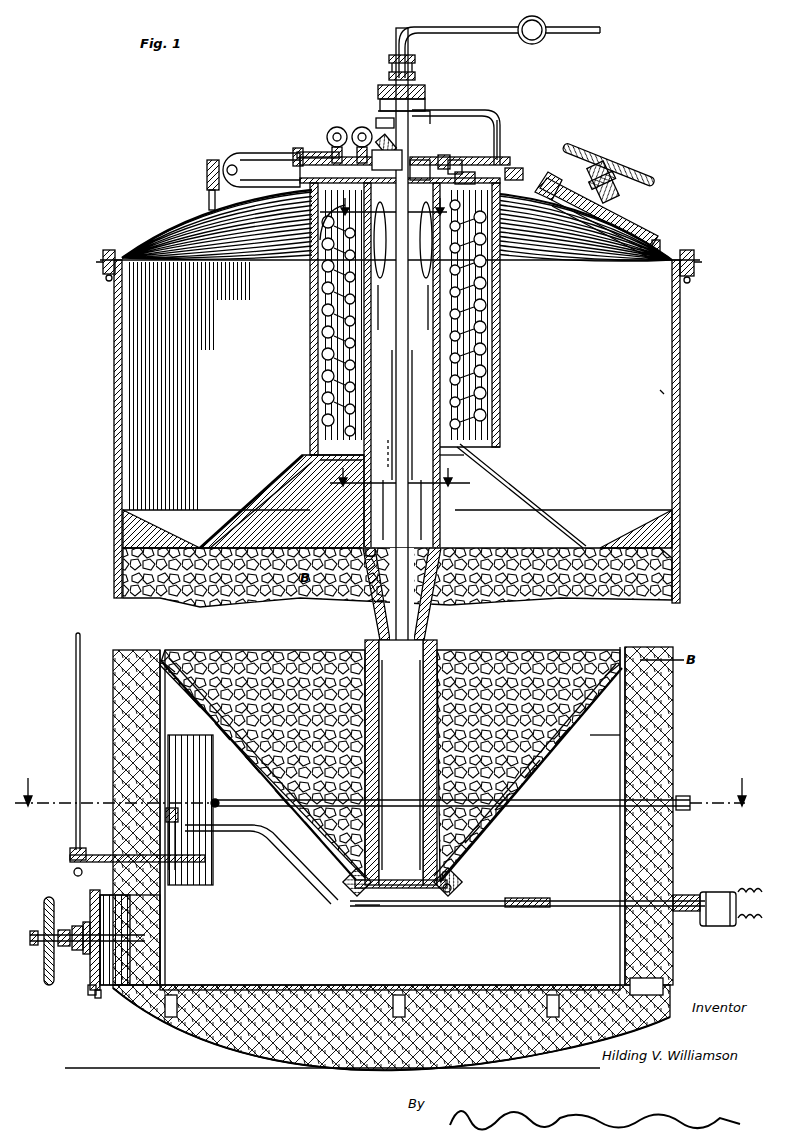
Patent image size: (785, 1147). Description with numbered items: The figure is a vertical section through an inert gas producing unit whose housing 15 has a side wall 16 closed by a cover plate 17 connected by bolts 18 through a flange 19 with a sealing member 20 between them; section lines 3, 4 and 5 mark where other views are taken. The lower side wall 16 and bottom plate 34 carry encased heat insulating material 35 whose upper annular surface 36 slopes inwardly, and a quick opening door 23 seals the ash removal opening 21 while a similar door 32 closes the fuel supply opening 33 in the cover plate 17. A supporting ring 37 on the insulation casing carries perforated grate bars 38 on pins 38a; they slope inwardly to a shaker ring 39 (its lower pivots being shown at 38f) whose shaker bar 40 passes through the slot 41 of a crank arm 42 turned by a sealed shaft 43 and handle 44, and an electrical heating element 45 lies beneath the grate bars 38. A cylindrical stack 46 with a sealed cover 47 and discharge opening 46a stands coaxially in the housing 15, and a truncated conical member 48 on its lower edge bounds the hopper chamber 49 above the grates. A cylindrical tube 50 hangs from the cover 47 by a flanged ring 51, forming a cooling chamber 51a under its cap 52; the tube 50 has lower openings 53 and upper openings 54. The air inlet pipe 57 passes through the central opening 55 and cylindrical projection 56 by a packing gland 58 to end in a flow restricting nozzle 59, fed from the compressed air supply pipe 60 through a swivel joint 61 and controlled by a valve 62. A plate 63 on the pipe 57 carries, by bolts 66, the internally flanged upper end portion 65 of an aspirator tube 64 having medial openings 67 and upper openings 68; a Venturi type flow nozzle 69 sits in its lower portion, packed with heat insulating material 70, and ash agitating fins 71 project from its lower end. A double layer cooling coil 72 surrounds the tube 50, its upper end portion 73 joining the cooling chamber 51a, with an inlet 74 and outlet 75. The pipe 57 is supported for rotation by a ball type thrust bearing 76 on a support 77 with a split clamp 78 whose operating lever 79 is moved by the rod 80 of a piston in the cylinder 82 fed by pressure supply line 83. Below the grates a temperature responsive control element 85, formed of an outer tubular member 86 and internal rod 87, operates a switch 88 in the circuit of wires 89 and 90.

The section line 3- 3 is at (387, 792).
The section line 4- 4 is at (386, 209).
The section line 5- 5 is at (400, 482).
The housing 15 is at (684, 473).
The side wall 16 is at (114, 428).
The cover plate 17 is at (172, 248).
The bolts 18 is at (108, 250).
The flange 19 is at (104, 272).
The sealing member 20 is at (96, 260).
The ash removal opening 21 is at (142, 912).
The quick opening door 23 is at (90, 990).
The quick opening door 32 is at (640, 220).
The fuel supply opening 33 is at (600, 230).
The bottom plate 34 is at (342, 1070).
The heat insulating material 35 is at (116, 738).
The upper annular surface 36 is at (124, 526).
The supporting ring 37 is at (610, 750).
The perforated grate bars 38 is at (232, 768).
The pins 38a is at (704, 720).
The plate pivot 38f is at (454, 890).
The shaker ring 39 is at (458, 880).
The shaker bar 40 is at (286, 852).
The slot 41 is at (178, 814).
The crank arm 42 is at (176, 844).
The shaft 43 is at (200, 858).
The handle 44 is at (74, 828).
The electrical heating element 45 is at (214, 802).
The cylindrical stack 46 is at (500, 338).
The discharge opening 46a is at (296, 148).
The sealed cover 47 is at (446, 156).
The truncated conical member 48 is at (548, 496).
The hopper chamber 49 is at (662, 392).
The cylindrical tube 50 is at (452, 472).
The flanged ring 51 is at (332, 150).
The cooling chamber 51a is at (456, 162).
The cap 52 is at (420, 160).
The openings 53 is at (404, 462).
The openings 54 is at (382, 258).
The central opening 55 is at (386, 166).
The cylindrical projection 56 is at (380, 140).
The air inlet pipe 57 is at (410, 90).
The packing gland 58 is at (378, 122).
The flow restricting nozzle 59 is at (364, 512).
The compressed air supply pipe 60 is at (399, 30).
The swivel joint 61 is at (389, 66).
The valve 62 is at (536, 44).
The plate 63 is at (458, 220).
The aspirator tube 64 is at (405, 415).
The internally flanged upper end portion 65 is at (346, 218).
The bolts 66 is at (474, 178).
The openings 67 is at (371, 500).
The openings 68 is at (404, 307).
The Venturi type flow nozzle 69 is at (380, 716).
The heat insulating material 70 is at (440, 592).
The ash agitating fins 71 is at (380, 778).
The double layer cooling coil 72 is at (488, 364).
The upper end portion 73 is at (500, 216).
The inlet 74 is at (356, 128).
The outlet 75 is at (328, 132).
The ball type thrust bearing 76 is at (431, 112).
The support 77 is at (478, 112).
The split clamp 78 is at (426, 102).
The operating lever 79 is at (502, 132).
The rod 80 is at (516, 180).
The cylinder 82 is at (264, 152).
The pressure supply line 83 is at (230, 162).
The temperature responsive control element 85 is at (500, 898).
The outer tubular member 86 is at (536, 898).
The internal rod 87 is at (512, 906).
The switch 88 is at (720, 892).
The wire 89 is at (760, 890).
The wire 90 is at (758, 922).